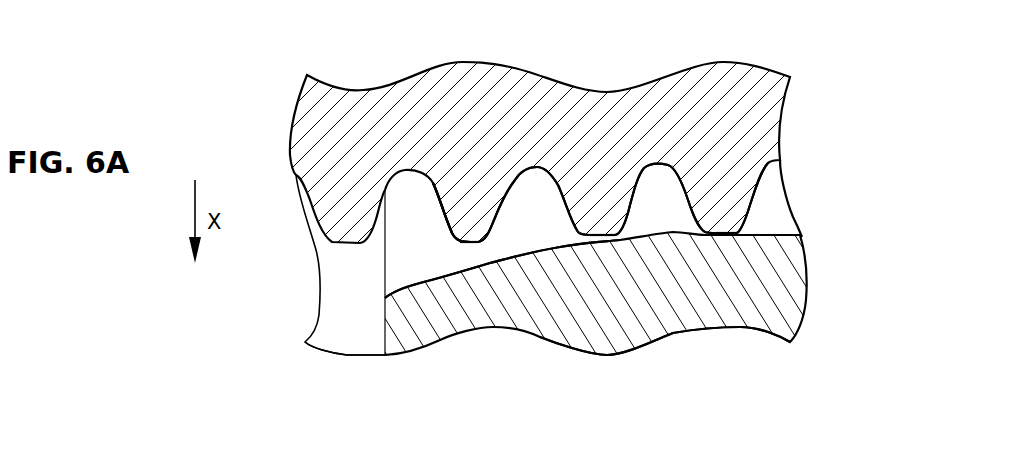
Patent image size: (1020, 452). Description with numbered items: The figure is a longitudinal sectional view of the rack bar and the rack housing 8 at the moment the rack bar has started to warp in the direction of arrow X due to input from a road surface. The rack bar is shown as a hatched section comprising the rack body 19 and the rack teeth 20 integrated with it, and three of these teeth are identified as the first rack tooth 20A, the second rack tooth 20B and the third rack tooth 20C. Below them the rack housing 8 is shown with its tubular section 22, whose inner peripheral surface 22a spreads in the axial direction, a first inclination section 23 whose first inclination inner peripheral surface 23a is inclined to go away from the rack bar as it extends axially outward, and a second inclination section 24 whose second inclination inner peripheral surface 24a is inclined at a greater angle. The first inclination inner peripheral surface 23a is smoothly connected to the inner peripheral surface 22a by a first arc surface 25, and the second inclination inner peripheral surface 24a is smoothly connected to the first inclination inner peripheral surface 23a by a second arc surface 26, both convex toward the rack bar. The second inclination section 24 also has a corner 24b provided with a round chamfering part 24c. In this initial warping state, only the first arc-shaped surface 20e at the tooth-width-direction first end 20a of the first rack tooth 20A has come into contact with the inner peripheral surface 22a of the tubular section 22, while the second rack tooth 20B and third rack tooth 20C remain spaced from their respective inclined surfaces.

The rack housing 8 is at (780, 280).
The rack body 19 is at (315, 130).
The rack teeth 20 is at (456, 218).
The tooth-width-direction first end 20a is at (456, 218).
The first rack tooth 20A is at (723, 213).
The second rack tooth 20B is at (600, 225).
The third rack tooth 20C is at (472, 232).
The first arc-shaped surface 20e is at (478, 242).
The tubular section 22 is at (722, 313).
The inner peripheral surface 22a is at (728, 237).
The first inclination section 23 is at (627, 329).
The first inclination inner peripheral surface 23a is at (576, 247).
The second inclination section 24 is at (458, 320).
The second inclination inner peripheral surface 24a is at (483, 265).
The corner 24b is at (395, 297).
The round chamfering part 24c is at (385, 300).
The first arc surface 25 is at (686, 237).
The second arc surface 26 is at (533, 248).